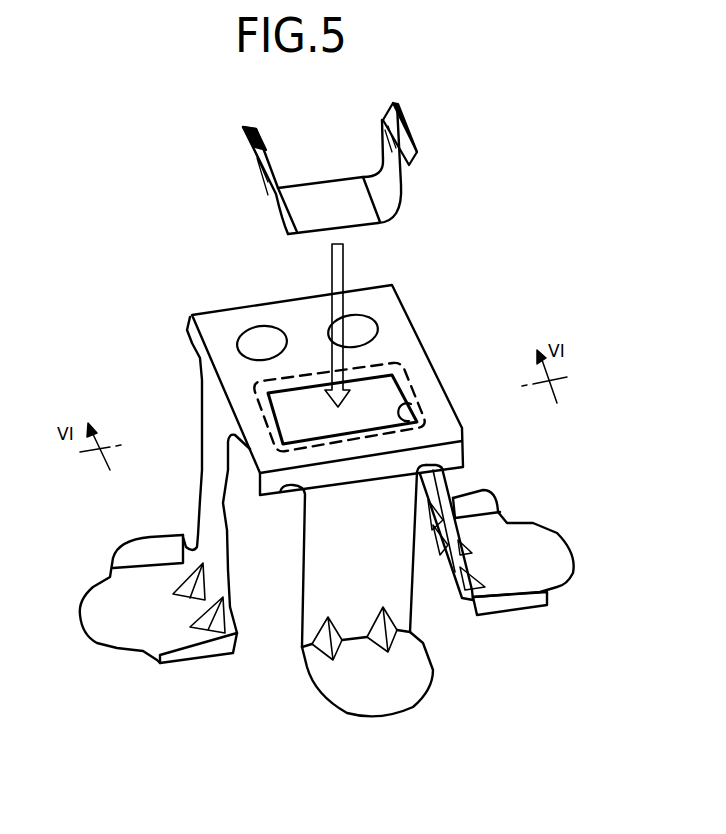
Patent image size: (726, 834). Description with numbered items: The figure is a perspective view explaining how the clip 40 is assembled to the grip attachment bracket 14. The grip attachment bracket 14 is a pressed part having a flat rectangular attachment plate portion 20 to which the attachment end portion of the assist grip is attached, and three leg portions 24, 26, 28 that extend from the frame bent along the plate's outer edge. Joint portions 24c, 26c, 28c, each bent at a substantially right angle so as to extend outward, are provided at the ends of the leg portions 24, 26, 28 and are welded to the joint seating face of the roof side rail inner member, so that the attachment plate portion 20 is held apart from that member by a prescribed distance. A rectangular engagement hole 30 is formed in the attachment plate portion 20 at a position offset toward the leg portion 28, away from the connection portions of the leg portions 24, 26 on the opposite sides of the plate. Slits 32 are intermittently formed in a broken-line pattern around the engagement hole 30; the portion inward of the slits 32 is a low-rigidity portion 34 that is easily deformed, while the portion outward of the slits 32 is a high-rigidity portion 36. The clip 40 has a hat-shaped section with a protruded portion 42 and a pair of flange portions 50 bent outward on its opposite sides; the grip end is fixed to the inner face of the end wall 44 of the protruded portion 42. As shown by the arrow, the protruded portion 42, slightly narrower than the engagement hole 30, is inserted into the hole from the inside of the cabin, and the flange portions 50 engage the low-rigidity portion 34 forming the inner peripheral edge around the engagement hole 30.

The grip attachment bracket 14 is at (341, 496).
The attachment plate portion 20 is at (220, 327).
The leg portion 24 is at (212, 498).
The joint portion 24c is at (115, 613).
The leg portion 26 is at (433, 500).
The joint portion 26c is at (533, 547).
The leg portion 28 is at (322, 588).
The joint portion 28c is at (402, 683).
The engagement hole 30 is at (425, 425).
The slit 32 is at (236, 392).
The low-rigidity portion 34 is at (400, 372).
The high-rigidity portion 36 is at (250, 421).
The clip 40 is at (310, 168).
The protruded portion 42 is at (383, 233).
The end wall 44 is at (333, 193).
The flange portion 50 is at (232, 170).